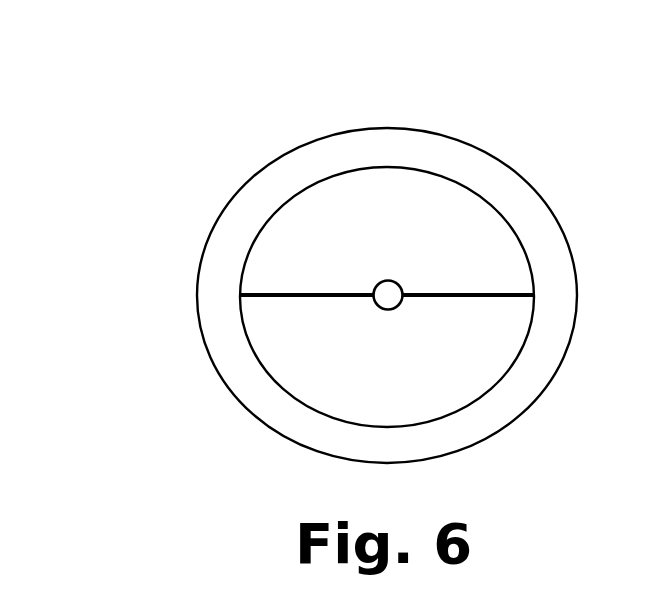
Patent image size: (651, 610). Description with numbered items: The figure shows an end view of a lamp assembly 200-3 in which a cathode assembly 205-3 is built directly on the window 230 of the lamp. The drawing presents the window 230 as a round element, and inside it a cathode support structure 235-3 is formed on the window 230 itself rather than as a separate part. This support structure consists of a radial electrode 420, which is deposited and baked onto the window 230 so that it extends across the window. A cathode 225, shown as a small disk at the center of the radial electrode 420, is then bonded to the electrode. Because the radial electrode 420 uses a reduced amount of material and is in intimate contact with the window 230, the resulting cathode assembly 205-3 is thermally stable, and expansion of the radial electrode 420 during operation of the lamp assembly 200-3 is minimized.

The lamp assembly 200-3 is at (184, 58).
The cathode assembly 205-3 is at (263, 362).
The cathode 225 is at (383, 280).
The window 230 is at (407, 372).
The cathode support structure 235-3 is at (339, 244).
The radial electrode 420 is at (477, 295).